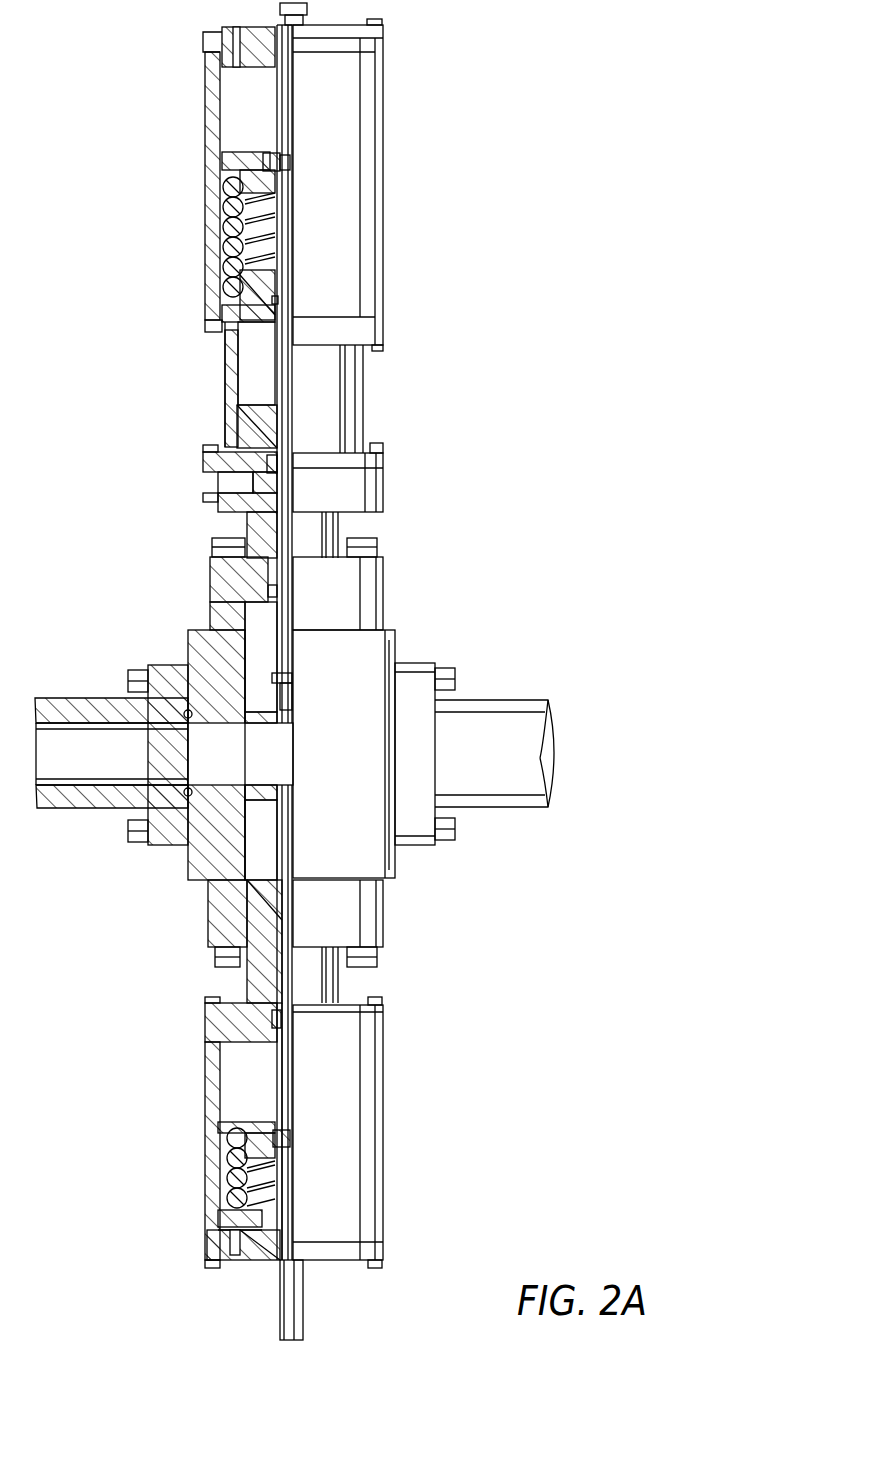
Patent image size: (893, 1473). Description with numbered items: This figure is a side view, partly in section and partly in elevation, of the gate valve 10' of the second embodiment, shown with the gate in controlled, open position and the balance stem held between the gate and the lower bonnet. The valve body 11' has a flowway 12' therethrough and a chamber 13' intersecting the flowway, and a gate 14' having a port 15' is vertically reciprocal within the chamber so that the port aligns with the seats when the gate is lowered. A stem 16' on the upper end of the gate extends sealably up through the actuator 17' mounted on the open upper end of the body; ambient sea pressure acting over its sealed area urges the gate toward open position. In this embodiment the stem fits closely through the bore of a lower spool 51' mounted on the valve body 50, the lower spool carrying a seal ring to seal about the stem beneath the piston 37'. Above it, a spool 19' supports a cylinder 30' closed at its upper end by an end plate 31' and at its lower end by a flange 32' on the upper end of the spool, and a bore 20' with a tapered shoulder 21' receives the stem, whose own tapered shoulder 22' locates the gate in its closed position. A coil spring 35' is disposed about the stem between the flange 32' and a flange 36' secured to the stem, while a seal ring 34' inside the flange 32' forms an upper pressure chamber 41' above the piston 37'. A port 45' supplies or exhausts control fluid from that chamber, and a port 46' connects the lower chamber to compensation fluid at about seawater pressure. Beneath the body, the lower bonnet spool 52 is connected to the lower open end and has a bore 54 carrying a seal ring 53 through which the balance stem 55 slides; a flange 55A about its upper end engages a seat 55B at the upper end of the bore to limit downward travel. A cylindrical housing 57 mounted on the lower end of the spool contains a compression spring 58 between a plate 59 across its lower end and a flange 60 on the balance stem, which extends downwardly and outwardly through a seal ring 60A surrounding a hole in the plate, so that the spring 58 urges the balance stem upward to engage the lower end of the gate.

The gate valve 10' is at (385, 593).
The valve body 11' is at (195, 744).
The flowway 12' is at (140, 776).
The chamber 13' is at (207, 754).
The gate 14' is at (181, 759).
The port 15' is at (320, 631).
The stem 16' is at (248, 579).
The actuator 17' is at (141, 384).
The spool 19' is at (409, 396).
The bore 20' is at (372, 559).
The tapered shoulder 21' is at (194, 636).
The tapered shoulder 22' is at (118, 748).
The cylinder 30' is at (382, 185).
The end plate 31' is at (198, 225).
The flange 32' is at (197, 257).
The seal ring 34' is at (371, 255).
The coil spring 35' is at (181, 233).
The flange 36' is at (205, 148).
The piston 37' is at (178, 388).
The upper pressure chamber 41' is at (354, 341).
The port 45' is at (166, 323).
The port 46' is at (198, 501).
The valve body 50 is at (398, 644).
The lower spool 51' is at (385, 500).
The lower bonnet spool 52 is at (280, 465).
The seal ring 53 is at (280, 1022).
The bore 54 is at (282, 920).
The balance stem 55 is at (295, 1080).
The flange 55A is at (280, 898).
The seat 55B is at (245, 940).
The cylindrical housing 57 is at (385, 1165).
The compression spring 58 is at (225, 1171).
The plate 59 is at (218, 1217).
The flange 60 is at (225, 1122).
The seal ring 60A is at (278, 1262).